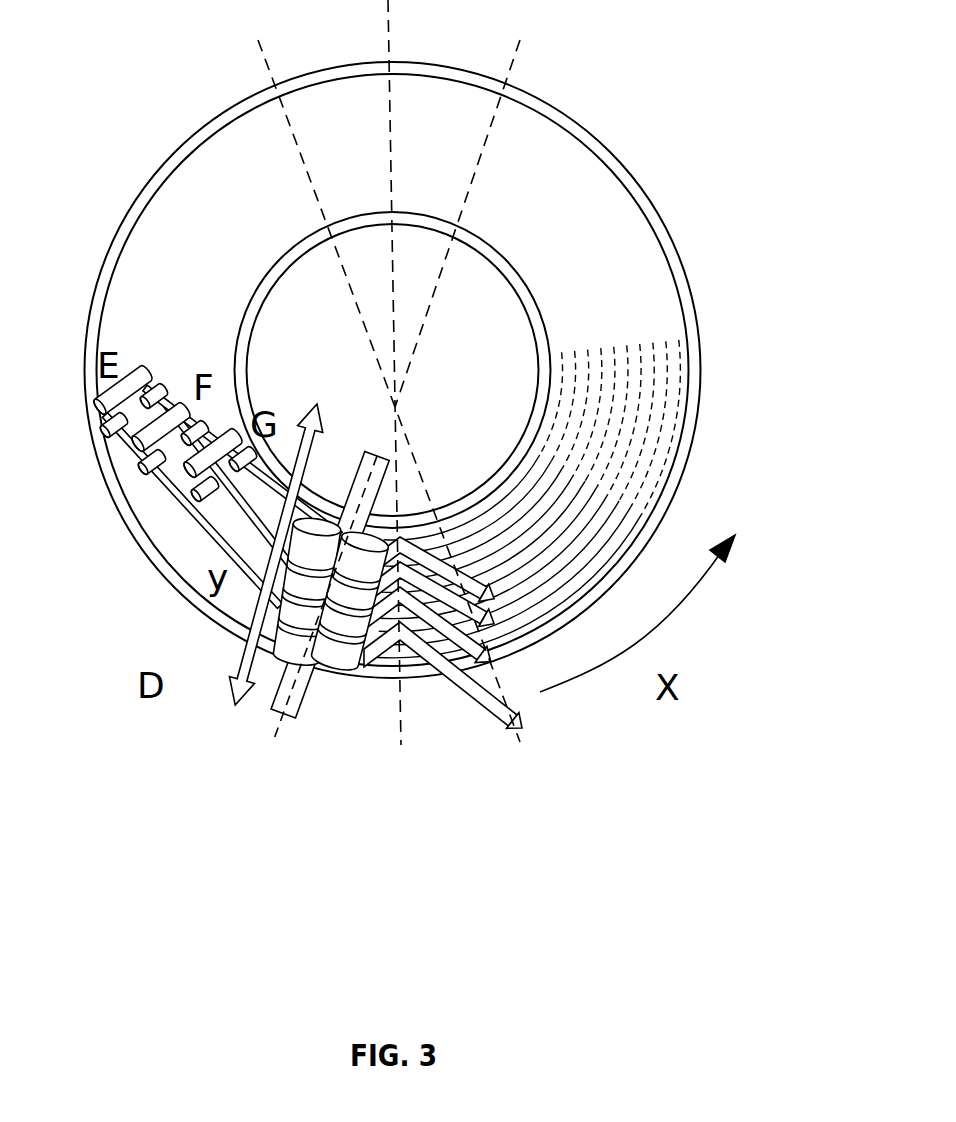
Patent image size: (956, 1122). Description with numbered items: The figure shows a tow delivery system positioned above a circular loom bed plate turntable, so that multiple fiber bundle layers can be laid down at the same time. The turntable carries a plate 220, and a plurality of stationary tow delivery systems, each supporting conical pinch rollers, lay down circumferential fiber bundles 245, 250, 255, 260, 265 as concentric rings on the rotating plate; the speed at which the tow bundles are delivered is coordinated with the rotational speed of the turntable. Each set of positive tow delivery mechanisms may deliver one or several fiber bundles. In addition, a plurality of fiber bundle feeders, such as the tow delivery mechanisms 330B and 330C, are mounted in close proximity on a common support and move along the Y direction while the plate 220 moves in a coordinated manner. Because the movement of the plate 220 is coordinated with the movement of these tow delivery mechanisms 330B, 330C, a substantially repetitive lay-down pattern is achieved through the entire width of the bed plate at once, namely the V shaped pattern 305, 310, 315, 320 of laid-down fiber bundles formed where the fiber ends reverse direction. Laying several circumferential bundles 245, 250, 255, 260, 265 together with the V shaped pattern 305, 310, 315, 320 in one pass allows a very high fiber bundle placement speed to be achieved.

The plate 220 is at (588, 195).
The circumferential fiber bundle 245 is at (545, 463).
The circumferential fiber bundle 250 is at (548, 502).
The circumferential fiber bundle 255 is at (592, 485).
The circumferential fiber bundle 260 is at (617, 497).
The circumferential fiber bundle 265 is at (640, 503).
The V shaped pattern 305 is at (522, 722).
The V shaped pattern 310 is at (485, 655).
The V shaped pattern 315 is at (490, 617).
The V shaped pattern 320 is at (490, 592).
The tow delivery mechanism 330B is at (285, 640).
The tow delivery mechanism 330C is at (360, 657).